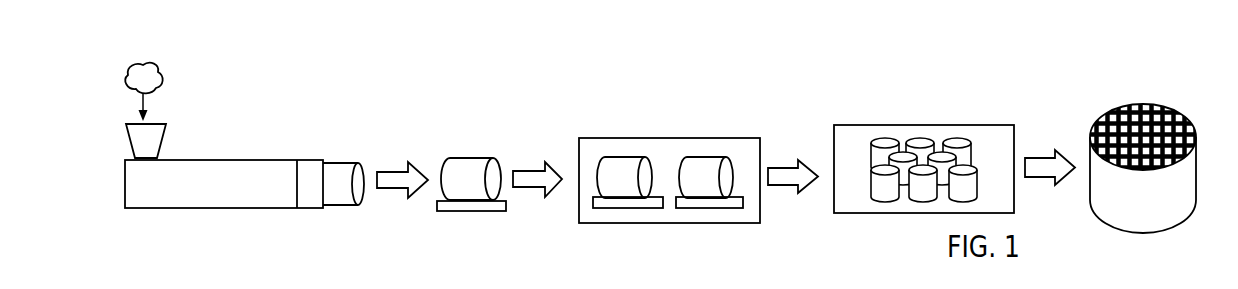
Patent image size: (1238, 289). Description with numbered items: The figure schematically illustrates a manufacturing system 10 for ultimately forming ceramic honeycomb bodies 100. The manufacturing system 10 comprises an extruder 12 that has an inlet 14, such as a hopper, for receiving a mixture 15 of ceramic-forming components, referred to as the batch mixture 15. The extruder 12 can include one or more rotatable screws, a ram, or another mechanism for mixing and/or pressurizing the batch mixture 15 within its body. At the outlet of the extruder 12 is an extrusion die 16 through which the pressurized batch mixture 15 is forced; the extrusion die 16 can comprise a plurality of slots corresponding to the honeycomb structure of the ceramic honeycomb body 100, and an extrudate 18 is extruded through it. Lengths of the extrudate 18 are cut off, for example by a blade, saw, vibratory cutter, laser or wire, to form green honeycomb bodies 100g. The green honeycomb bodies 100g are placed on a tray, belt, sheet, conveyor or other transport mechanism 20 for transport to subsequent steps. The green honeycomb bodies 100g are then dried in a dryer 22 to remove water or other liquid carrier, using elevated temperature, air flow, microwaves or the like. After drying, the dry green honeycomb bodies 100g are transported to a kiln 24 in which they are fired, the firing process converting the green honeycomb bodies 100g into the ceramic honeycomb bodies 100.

The manufacturing system 10 is at (94, 100).
The extruder 12 is at (188, 232).
The inlet 14 is at (152, 143).
The batch mixture 15 is at (153, 75).
The extrusion die 16 is at (310, 200).
The extrudate 18 is at (337, 177).
The transport mechanism 20 is at (475, 208).
The dryer 22 is at (648, 225).
The kiln 24 is at (866, 205).
The ceramic honeycomb body 100 is at (1112, 112).
The green honeycomb body 100g is at (467, 172).